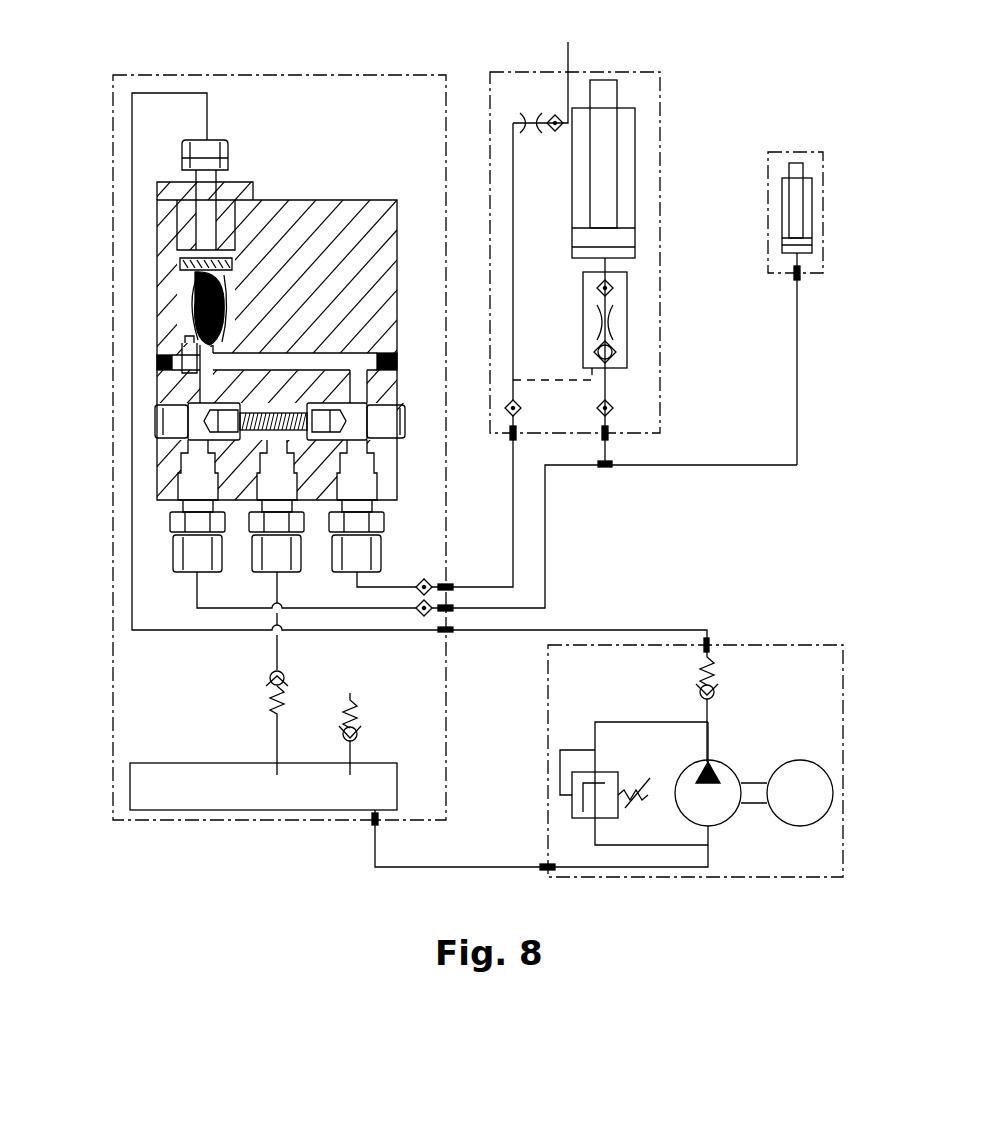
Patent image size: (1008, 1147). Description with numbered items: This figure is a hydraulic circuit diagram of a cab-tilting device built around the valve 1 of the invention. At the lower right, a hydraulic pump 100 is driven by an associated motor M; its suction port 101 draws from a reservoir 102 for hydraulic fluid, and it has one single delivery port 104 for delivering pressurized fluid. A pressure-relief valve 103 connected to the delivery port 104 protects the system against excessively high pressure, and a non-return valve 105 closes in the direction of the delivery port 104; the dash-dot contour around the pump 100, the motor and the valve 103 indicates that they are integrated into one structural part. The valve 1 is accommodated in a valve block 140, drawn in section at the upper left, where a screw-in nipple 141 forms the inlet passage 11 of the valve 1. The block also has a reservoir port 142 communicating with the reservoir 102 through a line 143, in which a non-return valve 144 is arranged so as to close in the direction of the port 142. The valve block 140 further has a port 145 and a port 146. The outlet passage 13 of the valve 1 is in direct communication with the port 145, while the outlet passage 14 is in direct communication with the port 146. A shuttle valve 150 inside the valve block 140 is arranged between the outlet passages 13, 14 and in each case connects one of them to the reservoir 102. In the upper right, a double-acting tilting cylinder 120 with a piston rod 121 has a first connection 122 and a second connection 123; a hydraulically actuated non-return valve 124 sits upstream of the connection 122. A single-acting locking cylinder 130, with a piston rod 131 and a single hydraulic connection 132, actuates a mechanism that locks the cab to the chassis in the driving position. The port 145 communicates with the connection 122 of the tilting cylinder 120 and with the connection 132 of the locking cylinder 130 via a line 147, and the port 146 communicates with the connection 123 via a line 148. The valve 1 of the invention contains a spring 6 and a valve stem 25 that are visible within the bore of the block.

The valve 1 is at (252, 248).
The spring 6 is at (186, 308).
The inlet passage 11 is at (210, 146).
The outlet passage 13 is at (186, 385).
The outlet passage 14 is at (288, 358).
The valve stem 25 is at (190, 327).
The hydraulic pump 100 is at (758, 786).
The suction port 101 is at (713, 824).
The reservoir 102 is at (226, 793).
The pressure-relief valve 103 is at (600, 778).
The delivery port 104 is at (730, 782).
The non-return valve 105 is at (726, 680).
The tilting cylinder 120 is at (644, 147).
The piston rod 121 is at (602, 98).
The first connection 122 is at (618, 265).
The second connection 123 is at (552, 72).
The hydraulically actuated non-return valve 124 is at (618, 360).
The locking cylinder 130 is at (818, 199).
The piston rod 131 is at (802, 170).
The hydraulic connection 132 is at (802, 265).
The valve block 140 is at (366, 222).
The screw-in nipple 141 is at (243, 183).
The reservoir port 142 is at (280, 556).
The line 143 is at (280, 655).
The non-return valve 144 is at (262, 695).
The port 145 is at (190, 552).
The port 146 is at (360, 552).
The line 147 is at (546, 560).
The line 148 is at (512, 492).
The shuttle valve 150 is at (358, 421).